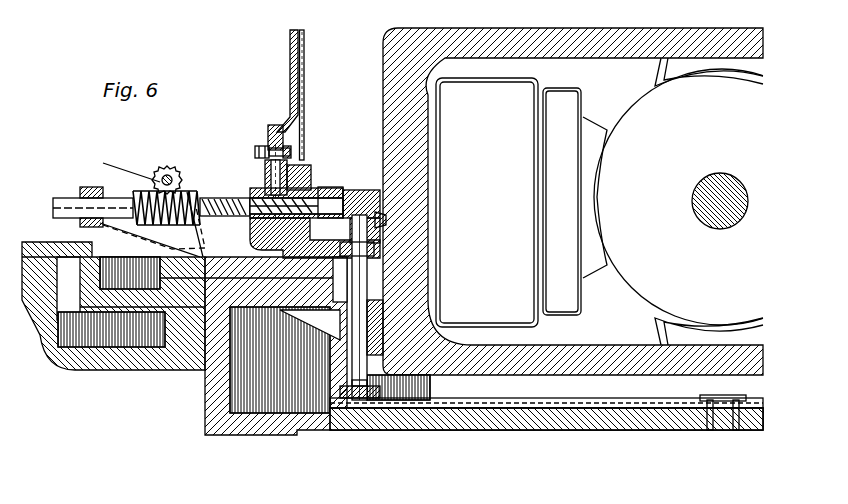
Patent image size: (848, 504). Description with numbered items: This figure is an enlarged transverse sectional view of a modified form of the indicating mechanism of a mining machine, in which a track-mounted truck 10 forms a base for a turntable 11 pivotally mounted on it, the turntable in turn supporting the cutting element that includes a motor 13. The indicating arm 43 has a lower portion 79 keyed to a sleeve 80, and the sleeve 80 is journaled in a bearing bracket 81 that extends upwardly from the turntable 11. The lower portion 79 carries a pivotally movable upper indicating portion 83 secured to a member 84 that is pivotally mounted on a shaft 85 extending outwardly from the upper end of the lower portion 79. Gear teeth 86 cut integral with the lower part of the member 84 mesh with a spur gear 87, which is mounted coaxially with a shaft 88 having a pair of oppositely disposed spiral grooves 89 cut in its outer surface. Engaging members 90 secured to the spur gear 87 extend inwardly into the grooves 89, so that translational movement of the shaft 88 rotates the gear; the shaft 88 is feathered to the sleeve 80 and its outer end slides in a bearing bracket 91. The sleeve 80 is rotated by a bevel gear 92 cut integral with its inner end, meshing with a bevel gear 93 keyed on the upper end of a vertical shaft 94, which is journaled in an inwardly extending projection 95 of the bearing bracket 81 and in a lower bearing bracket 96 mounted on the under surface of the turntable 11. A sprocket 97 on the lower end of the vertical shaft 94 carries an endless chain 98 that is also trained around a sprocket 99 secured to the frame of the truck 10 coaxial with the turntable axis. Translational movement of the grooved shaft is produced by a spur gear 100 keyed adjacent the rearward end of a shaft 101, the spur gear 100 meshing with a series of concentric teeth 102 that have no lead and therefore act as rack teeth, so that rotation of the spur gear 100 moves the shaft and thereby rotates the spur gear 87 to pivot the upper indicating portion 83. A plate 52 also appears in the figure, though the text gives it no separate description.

The track-mounted truck 10 is at (272, 437).
The turntable 11 is at (57, 322).
The motor 13 is at (500, 27).
The indicating arm 43 is at (261, 83).
The plate 52 is at (304, 62).
The lower portion 79 is at (300, 157).
The sleeve 80 is at (290, 186).
The bearing bracket 81 is at (300, 173).
The upper indicating portion 83 is at (287, 78).
The member 84 is at (268, 125).
The shaft 85 is at (283, 147).
The gear teeth 86 is at (250, 160).
The spur gear 87 is at (253, 240).
The shaft 88 is at (67, 200).
The spiral grooves 89 is at (233, 190).
The engaging members 90 is at (242, 215).
The bearing bracket 91 is at (78, 170).
The bevel gear 92 is at (340, 188).
The bevel gear 93 is at (378, 214).
The vertical shaft 94 is at (370, 288).
The inwardly extending projection 95 is at (370, 248).
The bearing bracket 96 is at (377, 325).
The sprocket 97 is at (330, 403).
The endless chain 98 is at (503, 397).
The sprocket 99 is at (710, 397).
The spur gear 100 is at (163, 165).
The shaft 101 is at (125, 166).
The concentric teeth 102 is at (191, 228).